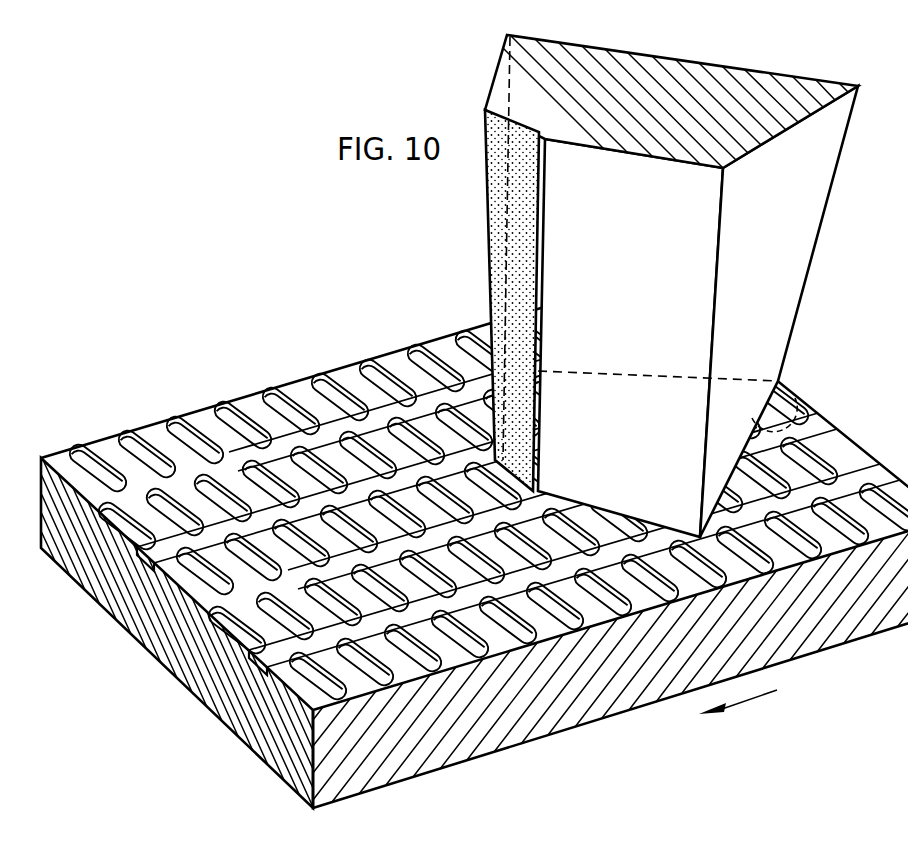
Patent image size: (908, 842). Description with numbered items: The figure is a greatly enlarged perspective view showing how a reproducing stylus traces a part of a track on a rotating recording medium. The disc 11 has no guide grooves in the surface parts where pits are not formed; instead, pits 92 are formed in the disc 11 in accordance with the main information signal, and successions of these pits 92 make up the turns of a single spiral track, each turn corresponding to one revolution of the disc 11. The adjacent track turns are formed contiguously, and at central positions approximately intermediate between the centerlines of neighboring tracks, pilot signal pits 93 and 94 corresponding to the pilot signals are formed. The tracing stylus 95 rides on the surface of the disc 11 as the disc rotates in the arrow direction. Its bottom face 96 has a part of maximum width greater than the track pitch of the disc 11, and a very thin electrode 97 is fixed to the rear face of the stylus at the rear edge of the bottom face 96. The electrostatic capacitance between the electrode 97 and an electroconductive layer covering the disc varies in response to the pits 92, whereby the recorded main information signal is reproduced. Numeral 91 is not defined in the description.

The disc 11 is at (243, 386).
The slot 91 is at (205, 406).
The pits 92 is at (416, 352).
The pilot signal pits 93 is at (148, 556).
The pilot signal pits 94 is at (378, 410).
The tracing stylus 95 is at (659, 286).
The bottom face 96 is at (793, 398).
The electrode 97 is at (496, 233).